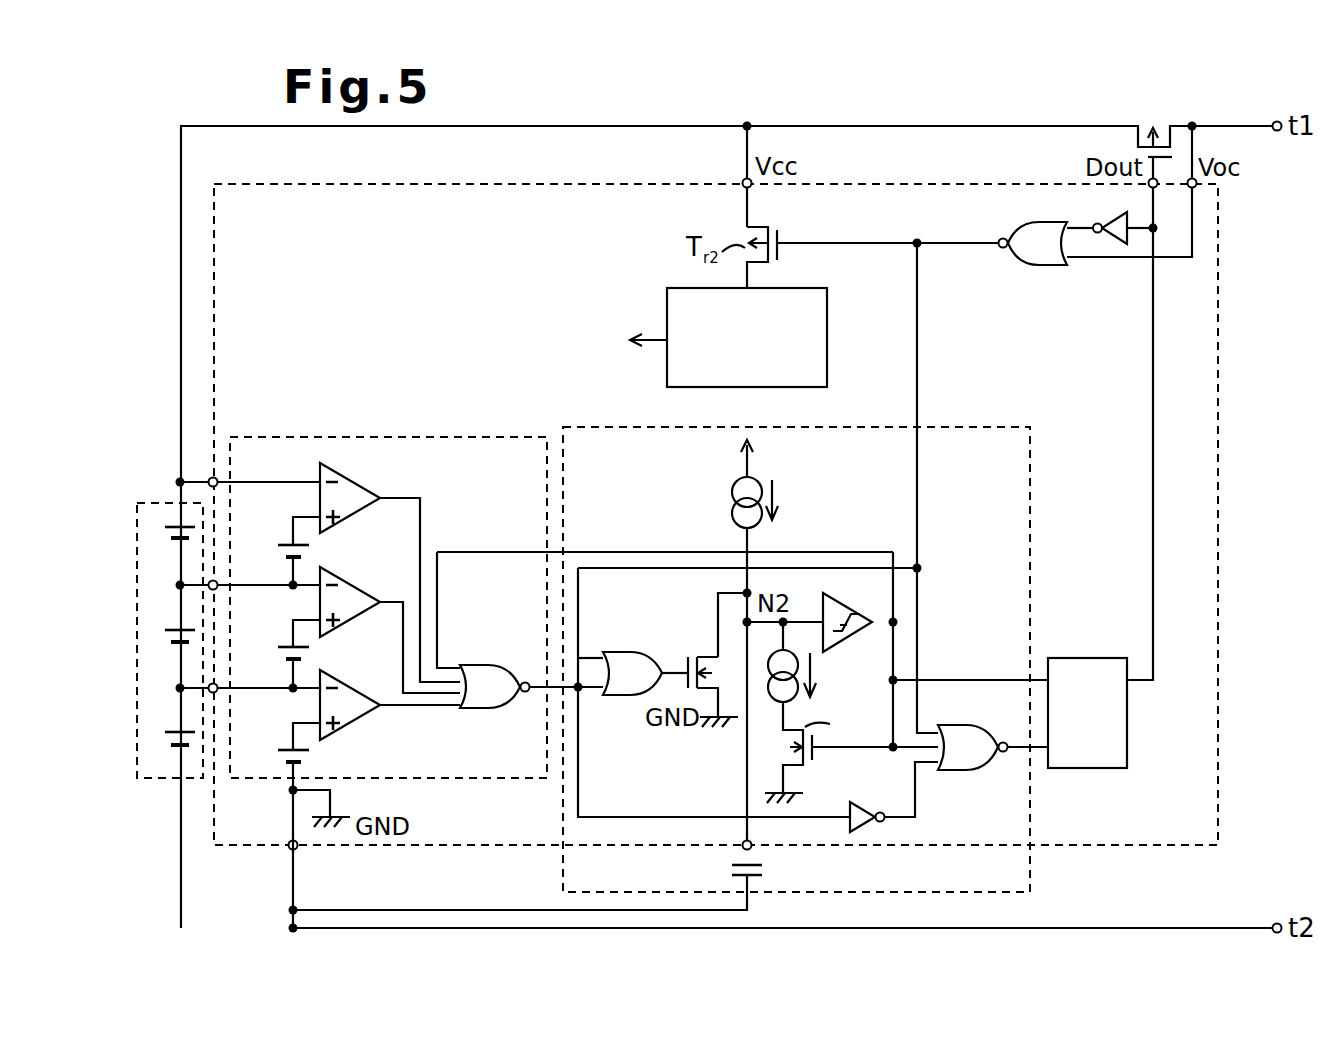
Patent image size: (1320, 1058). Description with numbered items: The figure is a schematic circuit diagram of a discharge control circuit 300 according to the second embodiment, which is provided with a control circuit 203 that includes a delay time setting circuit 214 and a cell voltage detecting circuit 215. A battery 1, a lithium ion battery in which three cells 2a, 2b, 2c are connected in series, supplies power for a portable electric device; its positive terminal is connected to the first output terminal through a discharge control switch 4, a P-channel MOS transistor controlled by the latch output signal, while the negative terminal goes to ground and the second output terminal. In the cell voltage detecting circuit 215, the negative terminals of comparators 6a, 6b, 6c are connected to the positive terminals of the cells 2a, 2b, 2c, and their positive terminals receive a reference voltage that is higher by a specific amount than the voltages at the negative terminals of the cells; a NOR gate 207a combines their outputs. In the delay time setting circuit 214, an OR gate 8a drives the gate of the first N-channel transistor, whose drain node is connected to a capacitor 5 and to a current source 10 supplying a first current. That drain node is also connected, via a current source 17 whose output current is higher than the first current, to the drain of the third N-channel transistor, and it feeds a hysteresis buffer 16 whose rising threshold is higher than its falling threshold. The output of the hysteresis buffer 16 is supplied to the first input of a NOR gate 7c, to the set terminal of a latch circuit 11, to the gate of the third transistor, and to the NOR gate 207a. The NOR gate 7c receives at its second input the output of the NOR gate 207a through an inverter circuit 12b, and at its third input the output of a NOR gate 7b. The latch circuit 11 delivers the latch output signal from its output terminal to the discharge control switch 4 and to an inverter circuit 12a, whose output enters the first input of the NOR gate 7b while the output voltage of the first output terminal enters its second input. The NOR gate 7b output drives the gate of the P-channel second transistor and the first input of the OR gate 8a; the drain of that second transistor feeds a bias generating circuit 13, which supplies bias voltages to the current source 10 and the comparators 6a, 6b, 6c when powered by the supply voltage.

The discharge control circuit 300 is at (1242, 104).
The control circuit 203 is at (1218, 290).
The battery 1 is at (164, 502).
The cell 2a is at (162, 527).
The cell 2b is at (162, 630).
The cell 2c is at (162, 732).
The cell voltage detecting circuit 215 is at (406, 433).
The comparator 6a is at (346, 480).
The comparator 6b is at (346, 584).
The comparator 6c is at (346, 687).
The NOR gate 207a is at (502, 665).
The delay time setting circuit 214 is at (1030, 460).
The current source 10 is at (730, 494).
The hysteresis buffer 16 is at (868, 612).
The OR gate 8a is at (650, 652).
The current source 17 is at (776, 704).
The inverter circuit 12b is at (862, 806).
The capacitor 5 is at (760, 862).
The NOR gate 7c is at (975, 732).
The latch circuit 11 is at (1127, 745).
The NOR gate 7b is at (1040, 265).
The inverter circuit 12a is at (1104, 218).
The discharge control switch 4 is at (1136, 140).
The bias generating circuit 13 is at (827, 305).